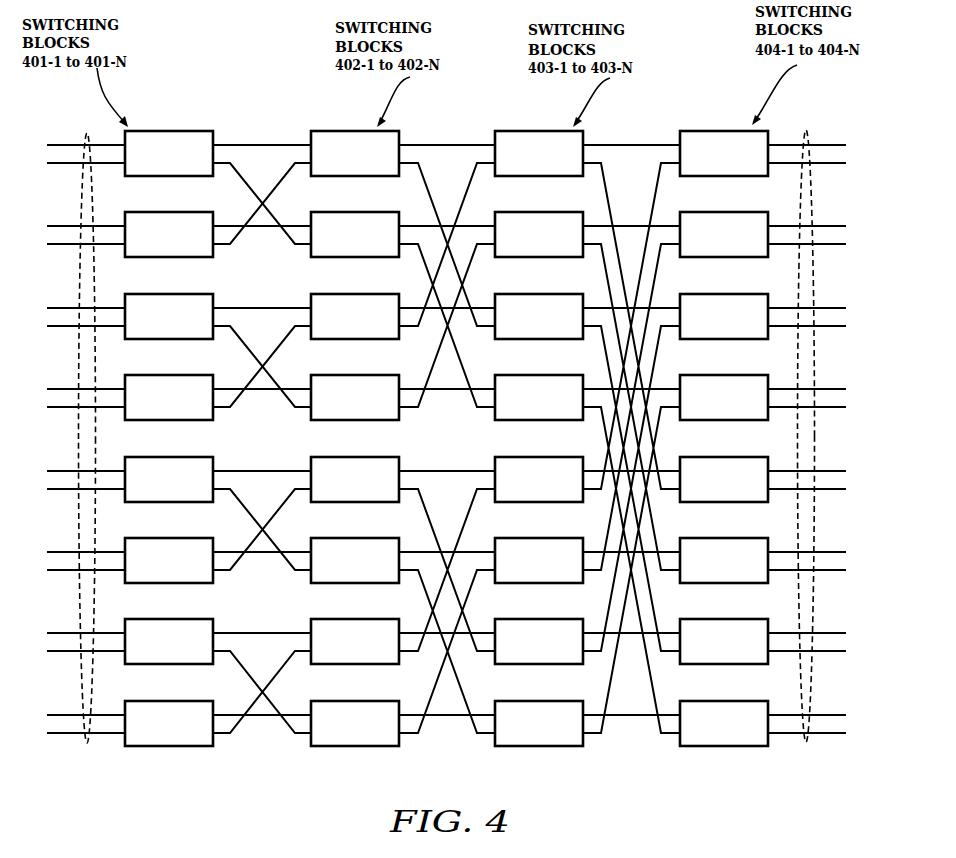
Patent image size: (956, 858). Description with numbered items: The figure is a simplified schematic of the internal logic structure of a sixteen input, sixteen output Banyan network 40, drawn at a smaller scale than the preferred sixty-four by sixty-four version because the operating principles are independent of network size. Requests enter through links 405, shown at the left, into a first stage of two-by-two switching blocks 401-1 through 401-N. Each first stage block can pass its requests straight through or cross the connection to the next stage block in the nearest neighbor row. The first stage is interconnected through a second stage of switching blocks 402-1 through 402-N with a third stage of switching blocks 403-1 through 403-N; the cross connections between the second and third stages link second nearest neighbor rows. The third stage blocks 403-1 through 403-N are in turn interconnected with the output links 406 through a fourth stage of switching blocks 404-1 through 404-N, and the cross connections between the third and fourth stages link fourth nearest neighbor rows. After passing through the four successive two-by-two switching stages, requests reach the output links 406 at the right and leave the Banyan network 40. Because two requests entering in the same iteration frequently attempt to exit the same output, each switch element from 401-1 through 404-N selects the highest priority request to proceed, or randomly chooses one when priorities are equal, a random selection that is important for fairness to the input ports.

The Banyan network 40 is at (260, 70).
The first stage switching block 401-1 is at (168, 131).
The first stage switching block 401-N is at (172, 747).
The second stage switching block 402-1 is at (354, 131).
The second stage switching block 402-N is at (357, 747).
The third stage switching block 403-1 is at (537, 131).
The third stage switching block 403-N is at (540, 747).
The fourth stage switching block 404-1 is at (723, 131).
The fourth stage switching block 404-N is at (724, 747).
The links 405 is at (87, 135).
The output links 406 is at (807, 131).